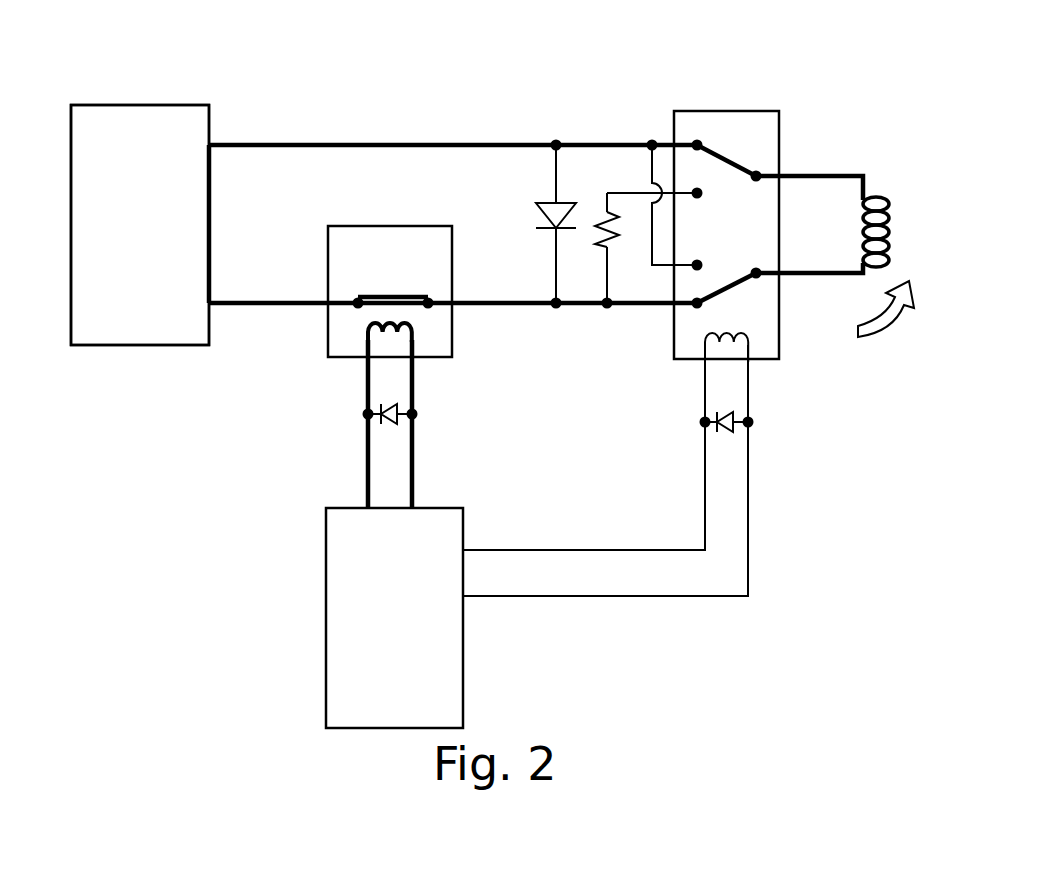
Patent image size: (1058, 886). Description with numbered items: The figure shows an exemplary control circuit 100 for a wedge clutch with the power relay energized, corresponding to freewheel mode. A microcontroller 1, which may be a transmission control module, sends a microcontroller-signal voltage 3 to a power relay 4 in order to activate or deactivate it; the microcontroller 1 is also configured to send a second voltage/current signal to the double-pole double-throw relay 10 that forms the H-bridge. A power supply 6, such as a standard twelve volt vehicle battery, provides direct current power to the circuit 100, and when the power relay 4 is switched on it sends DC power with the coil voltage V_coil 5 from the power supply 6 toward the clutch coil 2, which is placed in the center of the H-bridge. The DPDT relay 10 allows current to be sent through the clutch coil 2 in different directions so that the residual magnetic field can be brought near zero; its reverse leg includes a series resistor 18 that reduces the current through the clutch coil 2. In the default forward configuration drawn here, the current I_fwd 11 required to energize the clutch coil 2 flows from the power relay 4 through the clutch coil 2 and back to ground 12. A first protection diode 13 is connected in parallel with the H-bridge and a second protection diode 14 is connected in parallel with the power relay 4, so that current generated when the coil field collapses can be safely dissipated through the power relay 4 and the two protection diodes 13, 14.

The circuit 100 is at (86, 84).
The power supply 6 is at (134, 98).
The ground 12 is at (246, 100).
The coil voltage V_coil 5 is at (244, 250).
The power relay 4 is at (392, 226).
The microcontroller-signal voltage 3 is at (329, 460).
The second protection diode 14 is at (416, 414).
The first protection diode 13 is at (550, 203).
The series resistor 18 is at (605, 205).
The DPDT relay 10 is at (731, 110).
The clutch coil 2 is at (872, 200).
The forward current I_fwd 11 is at (851, 415).
The microcontroller 1 is at (348, 694).